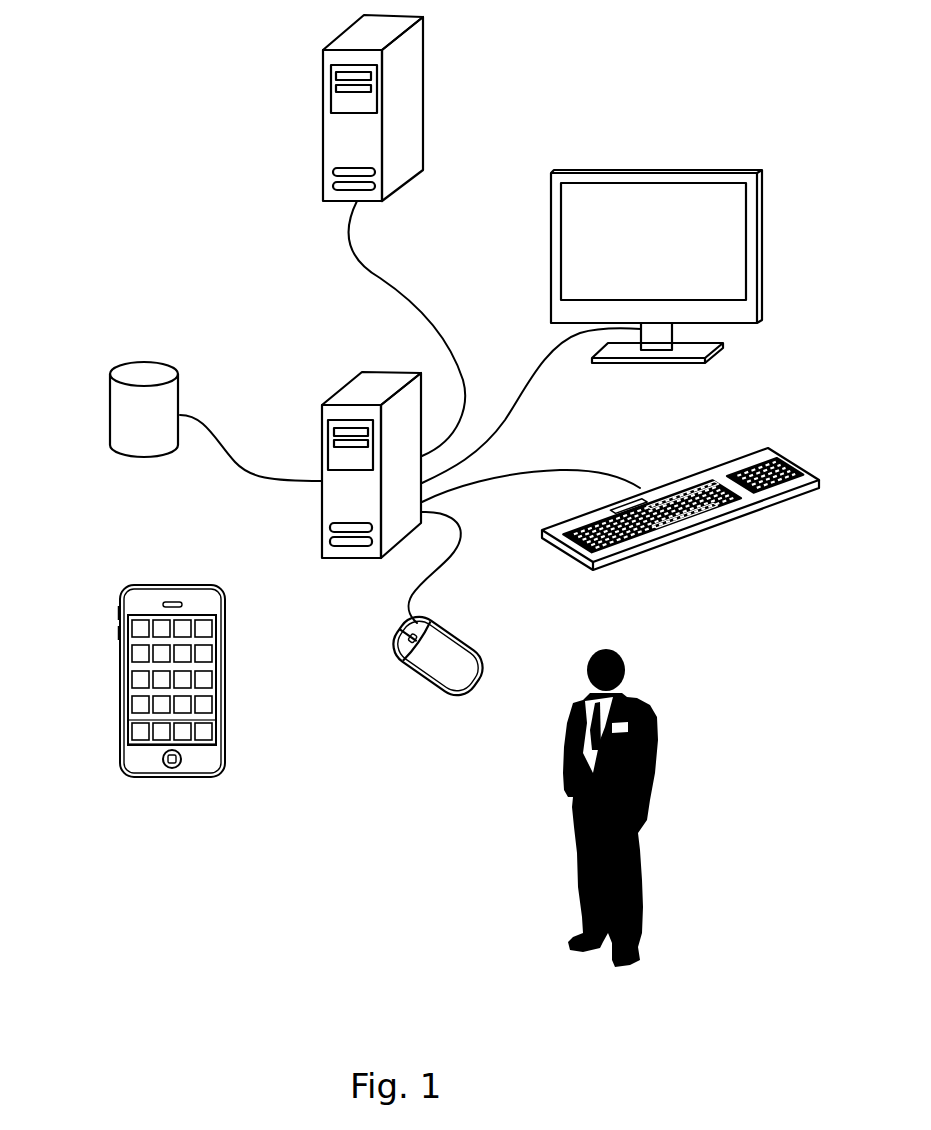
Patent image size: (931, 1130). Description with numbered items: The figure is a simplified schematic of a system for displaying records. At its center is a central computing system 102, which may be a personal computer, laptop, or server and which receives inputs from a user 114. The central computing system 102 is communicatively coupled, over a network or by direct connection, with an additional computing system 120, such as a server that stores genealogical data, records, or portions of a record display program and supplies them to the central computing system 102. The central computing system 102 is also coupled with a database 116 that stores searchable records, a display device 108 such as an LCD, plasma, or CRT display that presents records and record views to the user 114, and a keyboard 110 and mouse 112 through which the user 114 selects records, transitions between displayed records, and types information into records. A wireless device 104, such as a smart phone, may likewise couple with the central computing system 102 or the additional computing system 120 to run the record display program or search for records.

The central computing system 102 is at (347, 375).
The wireless device 104 is at (172, 778).
The display device 108 is at (693, 168).
The keyboard 110 is at (740, 520).
The mouse 112 is at (420, 672).
The user 114 is at (657, 785).
The database 116 is at (140, 360).
The additional computing system 120 is at (423, 75).